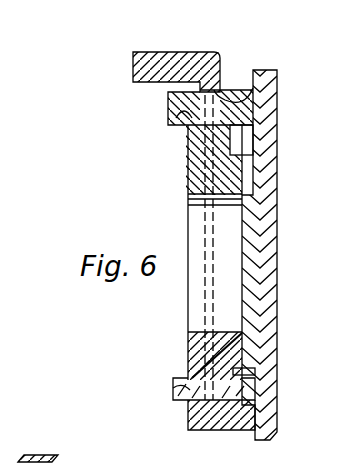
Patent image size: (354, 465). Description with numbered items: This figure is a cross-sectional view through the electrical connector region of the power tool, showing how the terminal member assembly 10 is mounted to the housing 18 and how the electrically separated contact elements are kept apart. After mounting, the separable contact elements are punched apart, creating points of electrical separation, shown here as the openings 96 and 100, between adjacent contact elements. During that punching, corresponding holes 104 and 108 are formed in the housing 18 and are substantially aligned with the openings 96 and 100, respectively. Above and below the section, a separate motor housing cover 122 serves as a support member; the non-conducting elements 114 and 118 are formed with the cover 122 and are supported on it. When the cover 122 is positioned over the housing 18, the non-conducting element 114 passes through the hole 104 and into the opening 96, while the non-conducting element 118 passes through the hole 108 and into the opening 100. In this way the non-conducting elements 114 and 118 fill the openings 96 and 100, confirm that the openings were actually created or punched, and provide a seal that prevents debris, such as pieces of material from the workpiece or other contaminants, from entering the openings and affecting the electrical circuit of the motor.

The terminal member assembly 10 is at (136, 63).
The housing 18 is at (186, 53).
The opening 96 is at (262, 92).
The opening 100 is at (251, 418).
The hole 104 is at (190, 113).
The hole 108 is at (176, 385).
The non-conducting element 114 is at (172, 103).
The non-conducting element 118 is at (173, 397).
The motor housing cover 122 is at (278, 119).